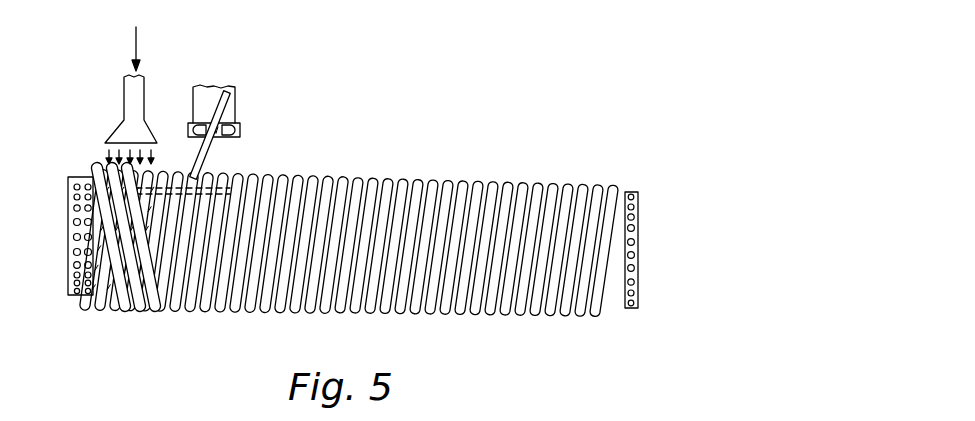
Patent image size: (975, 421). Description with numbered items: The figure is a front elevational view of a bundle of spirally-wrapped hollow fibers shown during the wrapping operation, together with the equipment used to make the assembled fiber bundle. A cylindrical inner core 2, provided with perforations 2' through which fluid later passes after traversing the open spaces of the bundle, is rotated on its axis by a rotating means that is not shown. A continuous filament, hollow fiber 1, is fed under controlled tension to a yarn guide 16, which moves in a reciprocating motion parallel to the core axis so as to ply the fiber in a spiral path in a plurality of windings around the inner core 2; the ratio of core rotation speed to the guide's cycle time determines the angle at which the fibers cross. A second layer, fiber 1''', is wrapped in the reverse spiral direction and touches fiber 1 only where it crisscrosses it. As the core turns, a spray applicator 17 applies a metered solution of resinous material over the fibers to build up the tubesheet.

The hollow fiber 1 is at (349, 246).
The second-layer hollow fiber 1''' is at (137, 251).
The inner core 2 is at (362, 223).
The perforations 2' is at (338, 229).
The yarn guide 16 is at (240, 131).
The spray applicator 17 is at (144, 114).